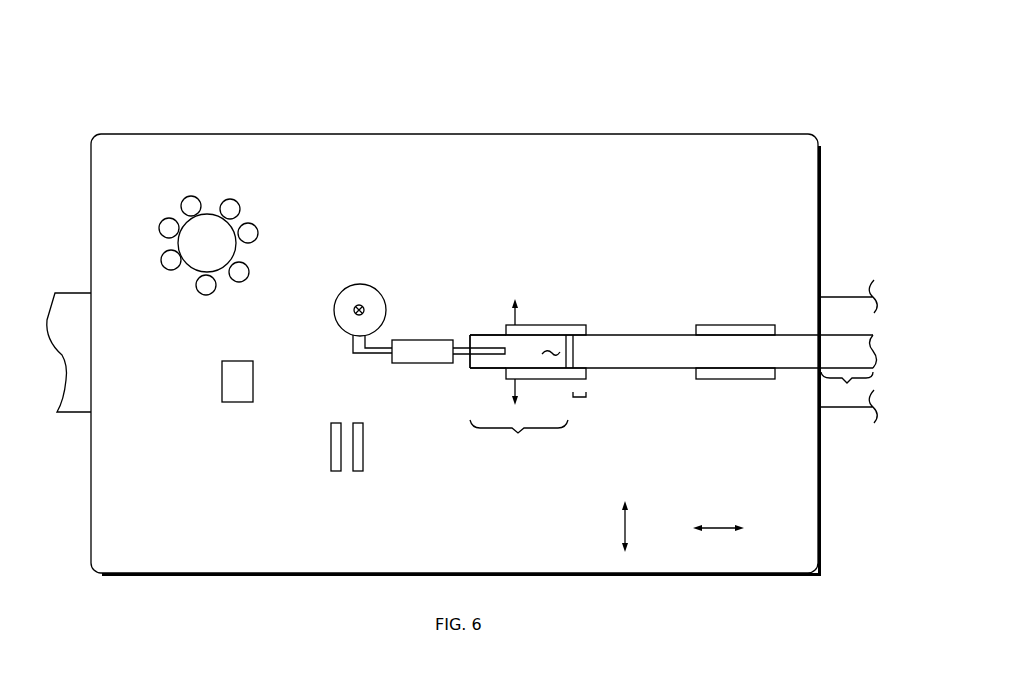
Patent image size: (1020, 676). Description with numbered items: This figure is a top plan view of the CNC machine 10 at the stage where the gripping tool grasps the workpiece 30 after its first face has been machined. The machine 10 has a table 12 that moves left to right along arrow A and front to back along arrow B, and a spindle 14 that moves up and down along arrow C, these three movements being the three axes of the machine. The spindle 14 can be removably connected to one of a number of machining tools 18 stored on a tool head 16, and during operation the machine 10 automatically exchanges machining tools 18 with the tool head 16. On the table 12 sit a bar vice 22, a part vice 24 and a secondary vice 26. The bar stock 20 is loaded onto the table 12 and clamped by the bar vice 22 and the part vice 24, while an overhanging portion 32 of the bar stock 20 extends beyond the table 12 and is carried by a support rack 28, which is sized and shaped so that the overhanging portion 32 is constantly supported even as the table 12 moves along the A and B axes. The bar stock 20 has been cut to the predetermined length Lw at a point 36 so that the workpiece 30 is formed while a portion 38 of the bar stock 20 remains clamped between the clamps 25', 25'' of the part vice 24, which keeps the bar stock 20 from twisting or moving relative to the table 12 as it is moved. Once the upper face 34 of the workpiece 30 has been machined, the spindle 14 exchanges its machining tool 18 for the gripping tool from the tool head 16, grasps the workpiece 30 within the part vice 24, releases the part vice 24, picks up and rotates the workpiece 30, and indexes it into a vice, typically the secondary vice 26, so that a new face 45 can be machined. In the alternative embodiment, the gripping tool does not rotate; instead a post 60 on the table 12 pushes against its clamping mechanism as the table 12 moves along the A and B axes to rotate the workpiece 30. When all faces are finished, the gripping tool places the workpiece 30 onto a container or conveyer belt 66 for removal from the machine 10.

The CNC machine 10 is at (620, 66).
The table 12 is at (452, 134).
The spindle 14 is at (371, 305).
The tool head 16 is at (208, 262).
The machining tools 18 is at (162, 257).
The bar stock 20 is at (810, 370).
The bar vice 22 is at (730, 296).
The part vice 24 is at (522, 334).
The clamp 25' is at (546, 304).
The clamp 25'' is at (505, 386).
The secondary vice 26 is at (348, 492).
The support rack 28 is at (832, 297).
The workpiece 30 is at (478, 335).
The overhanging portion 32 is at (847, 384).
The upper face 34 is at (552, 350).
The cut point 36 is at (577, 345).
The bar stock portion 38 is at (581, 405).
The new face 45 is at (493, 326).
The post 60 is at (254, 378).
The container or conveyer belt 66 is at (80, 413).
The arrow A is at (718, 529).
The arrow B is at (624, 529).
The arrow C is at (365, 308).
The workpiece length Lw is at (519, 436).